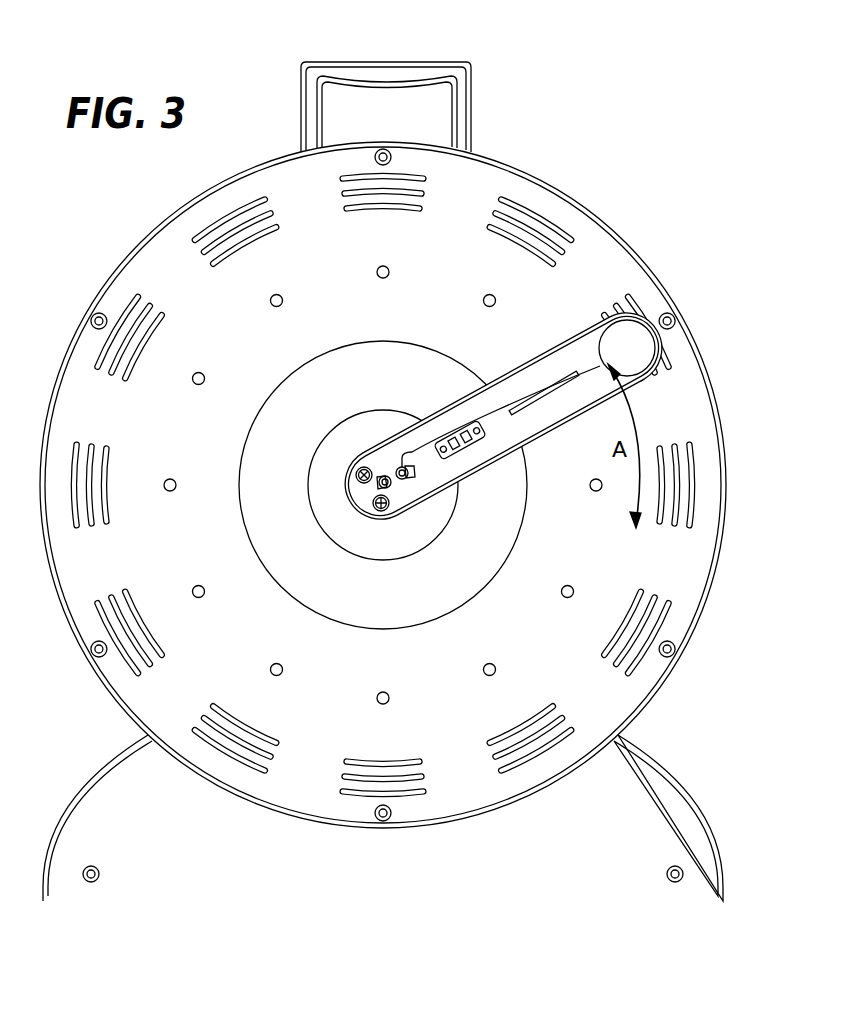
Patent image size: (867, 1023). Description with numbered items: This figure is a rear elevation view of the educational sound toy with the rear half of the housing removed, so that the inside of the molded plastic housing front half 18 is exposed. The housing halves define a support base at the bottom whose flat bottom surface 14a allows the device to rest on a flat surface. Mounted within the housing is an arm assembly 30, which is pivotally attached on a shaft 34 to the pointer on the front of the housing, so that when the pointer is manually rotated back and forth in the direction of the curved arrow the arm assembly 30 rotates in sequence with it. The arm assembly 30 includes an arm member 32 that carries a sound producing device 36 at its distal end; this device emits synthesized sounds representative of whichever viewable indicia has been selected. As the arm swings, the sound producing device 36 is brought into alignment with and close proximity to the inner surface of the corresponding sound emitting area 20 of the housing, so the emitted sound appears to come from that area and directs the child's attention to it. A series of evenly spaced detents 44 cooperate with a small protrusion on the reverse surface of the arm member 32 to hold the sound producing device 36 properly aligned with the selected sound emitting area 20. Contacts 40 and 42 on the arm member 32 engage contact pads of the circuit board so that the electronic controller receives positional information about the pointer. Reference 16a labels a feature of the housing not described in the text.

The bottom surface 14a is at (527, 903).
The handle 16a is at (471, 84).
The housing front half 18 is at (624, 233).
The sound emitting area 20 is at (537, 222).
The arm assembly 30 is at (513, 364).
The arm member 32 is at (553, 348).
The shaft 34 is at (384, 477).
The sound producing device 36 is at (637, 350).
The contact 40 is at (446, 438).
The contact 42 is at (463, 432).
The detents 44 is at (278, 294).